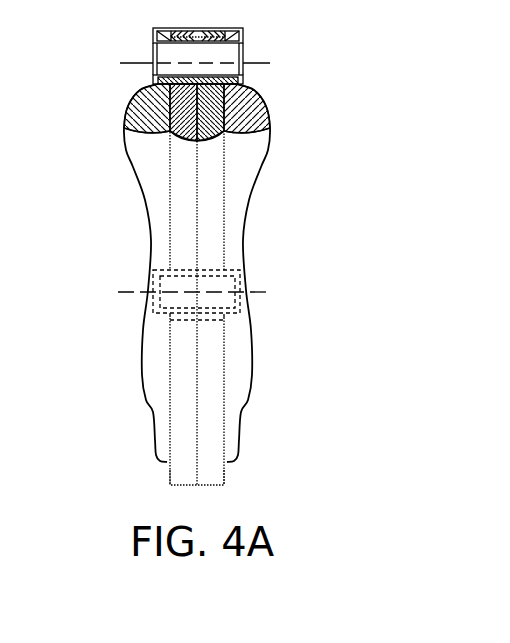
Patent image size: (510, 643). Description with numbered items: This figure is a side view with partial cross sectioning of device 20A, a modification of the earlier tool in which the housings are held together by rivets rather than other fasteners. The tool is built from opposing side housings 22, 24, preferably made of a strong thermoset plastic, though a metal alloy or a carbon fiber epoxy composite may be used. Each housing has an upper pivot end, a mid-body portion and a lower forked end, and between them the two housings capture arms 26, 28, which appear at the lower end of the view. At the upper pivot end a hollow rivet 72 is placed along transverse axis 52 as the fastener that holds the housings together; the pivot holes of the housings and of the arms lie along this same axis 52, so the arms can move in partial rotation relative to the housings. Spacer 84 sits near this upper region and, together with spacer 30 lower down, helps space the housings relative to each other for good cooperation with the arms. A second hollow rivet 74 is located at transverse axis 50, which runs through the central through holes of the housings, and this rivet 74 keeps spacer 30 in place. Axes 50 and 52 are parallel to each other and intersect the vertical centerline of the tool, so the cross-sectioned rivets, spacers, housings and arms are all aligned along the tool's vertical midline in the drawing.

The device 20A is at (166, 273).
The side housing 22 is at (135, 160).
The side housing 24 is at (252, 160).
The arm 26 is at (178, 477).
The arm 28 is at (213, 478).
The spacer 30 is at (213, 320).
The transverse axis 50 is at (253, 292).
The transverse axis 52 is at (252, 63).
The hollow rivet 72 is at (158, 45).
The hollow rivet 74 is at (183, 275).
The spacer 84 is at (178, 86).